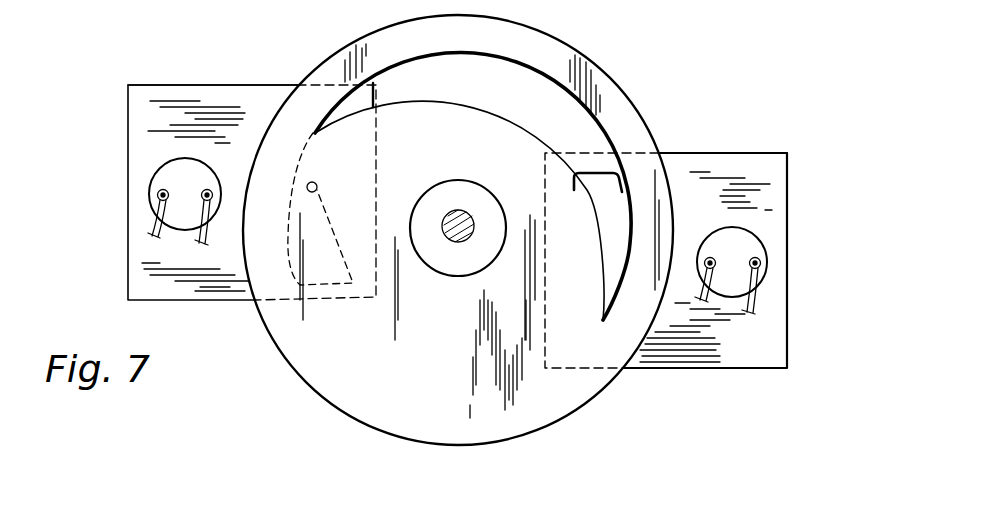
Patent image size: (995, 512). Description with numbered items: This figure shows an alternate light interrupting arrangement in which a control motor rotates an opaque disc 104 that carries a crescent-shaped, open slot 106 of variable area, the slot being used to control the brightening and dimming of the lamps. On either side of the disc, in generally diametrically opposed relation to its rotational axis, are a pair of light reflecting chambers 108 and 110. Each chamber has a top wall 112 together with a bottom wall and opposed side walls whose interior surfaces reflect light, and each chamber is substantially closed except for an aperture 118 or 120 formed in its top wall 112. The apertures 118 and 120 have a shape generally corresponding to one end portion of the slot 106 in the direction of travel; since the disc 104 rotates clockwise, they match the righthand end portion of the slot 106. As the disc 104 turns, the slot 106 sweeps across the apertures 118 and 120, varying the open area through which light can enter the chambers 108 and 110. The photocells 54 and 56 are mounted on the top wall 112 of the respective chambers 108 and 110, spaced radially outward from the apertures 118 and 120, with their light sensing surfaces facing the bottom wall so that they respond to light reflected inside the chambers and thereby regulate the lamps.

The photocell 54 is at (170, 175).
The photocell 56 is at (742, 238).
The opaque disc 104 is at (282, 318).
The crescent-shaped open slot 106 is at (550, 92).
The light reflecting chamber 108 is at (116, 132).
The light reflecting chamber 110 is at (794, 264).
The top wall 112 is at (173, 98).
The aperture 118 is at (317, 185).
The aperture 120 is at (604, 213).